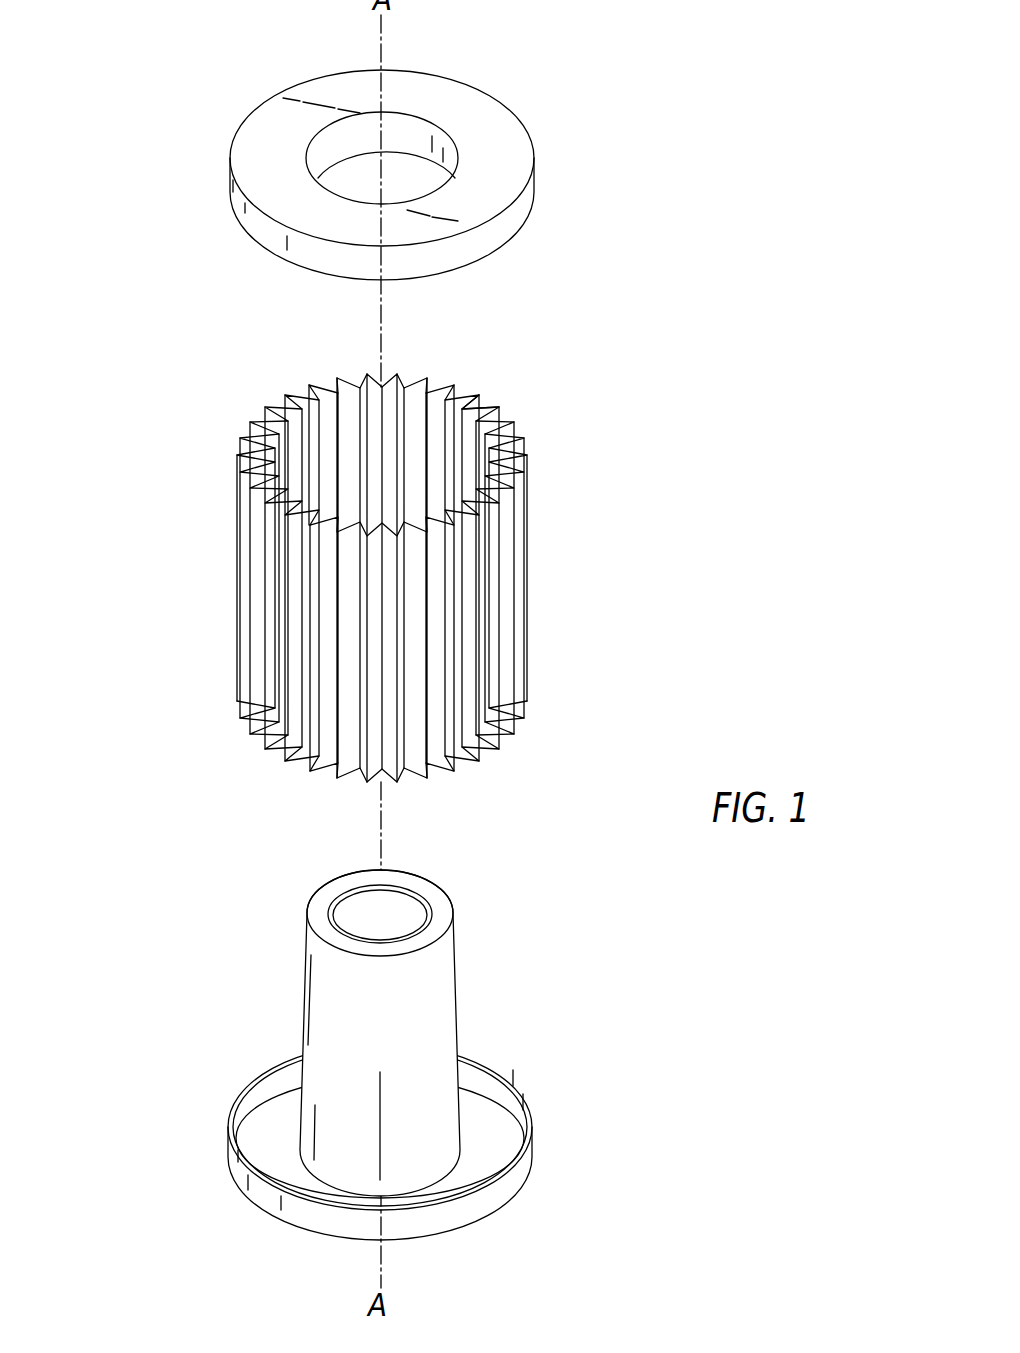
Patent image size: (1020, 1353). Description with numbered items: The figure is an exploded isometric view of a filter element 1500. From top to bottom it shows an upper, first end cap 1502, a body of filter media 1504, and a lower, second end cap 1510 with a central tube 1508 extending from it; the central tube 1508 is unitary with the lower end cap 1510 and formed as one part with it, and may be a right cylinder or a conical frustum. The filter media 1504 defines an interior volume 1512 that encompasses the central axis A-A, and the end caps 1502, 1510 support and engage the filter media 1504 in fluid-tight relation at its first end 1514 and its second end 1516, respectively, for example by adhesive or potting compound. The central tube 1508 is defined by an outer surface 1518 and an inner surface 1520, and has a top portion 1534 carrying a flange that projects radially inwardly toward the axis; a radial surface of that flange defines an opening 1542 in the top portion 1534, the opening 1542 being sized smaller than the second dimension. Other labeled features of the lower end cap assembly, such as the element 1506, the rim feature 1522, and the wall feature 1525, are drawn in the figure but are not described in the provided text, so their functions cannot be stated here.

The filter element 1500 is at (128, 1226).
The first end cap 1502 is at (543, 62).
The filter media 1504 is at (542, 596).
The end cap 1506 is at (596, 953).
The central tube 1508 is at (282, 982).
The second end cap 1510 is at (216, 1143).
The interior volume 1512 is at (386, 438).
The first end 1514 is at (493, 414).
The second end 1516 is at (483, 751).
The outer surface 1518 is at (438, 983).
The inner surface 1520 is at (344, 908).
The rim lip 1522 is at (506, 1093).
The flange side wall 1525 is at (498, 1183).
The top portion 1534 is at (416, 866).
The opening 1542 is at (397, 921).